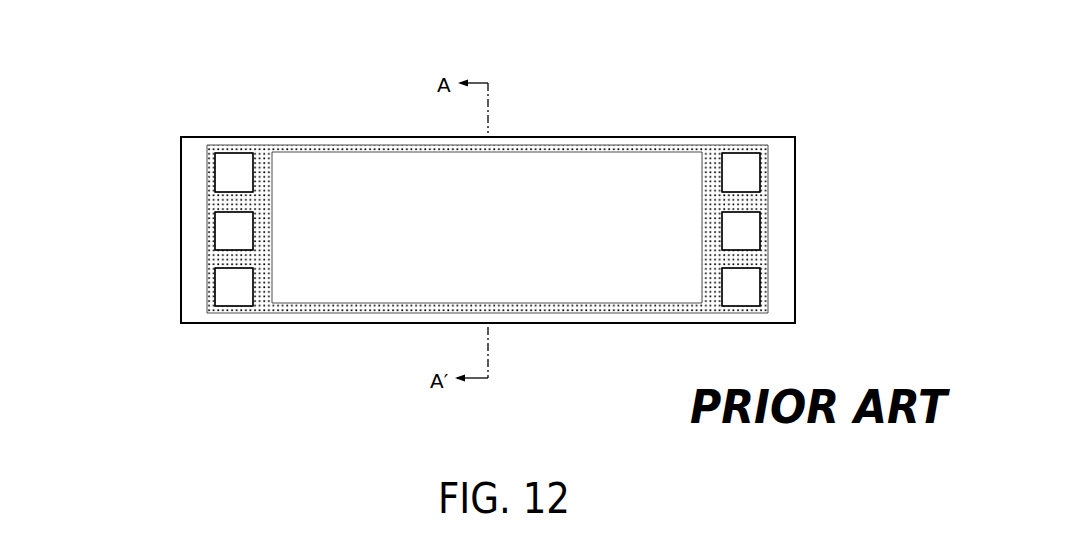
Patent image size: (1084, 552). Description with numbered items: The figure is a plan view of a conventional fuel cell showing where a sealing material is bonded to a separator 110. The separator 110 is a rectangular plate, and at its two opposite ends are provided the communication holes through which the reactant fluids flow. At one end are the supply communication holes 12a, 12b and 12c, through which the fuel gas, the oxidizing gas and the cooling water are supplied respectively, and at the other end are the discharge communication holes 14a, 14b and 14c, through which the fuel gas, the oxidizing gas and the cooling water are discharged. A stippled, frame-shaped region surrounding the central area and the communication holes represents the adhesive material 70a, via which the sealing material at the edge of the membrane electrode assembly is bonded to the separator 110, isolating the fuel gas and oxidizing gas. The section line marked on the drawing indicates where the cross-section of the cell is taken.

The separator 110 is at (762, 132).
The supply communication hole 12a is at (758, 186).
The supply communication hole 12b is at (758, 244).
The supply communication hole 12c is at (733, 306).
The discharge communication hole 14a is at (218, 293).
The discharge communication hole 14b is at (218, 176).
The discharge communication hole 14c is at (218, 232).
The adhesive material 70a is at (758, 262).